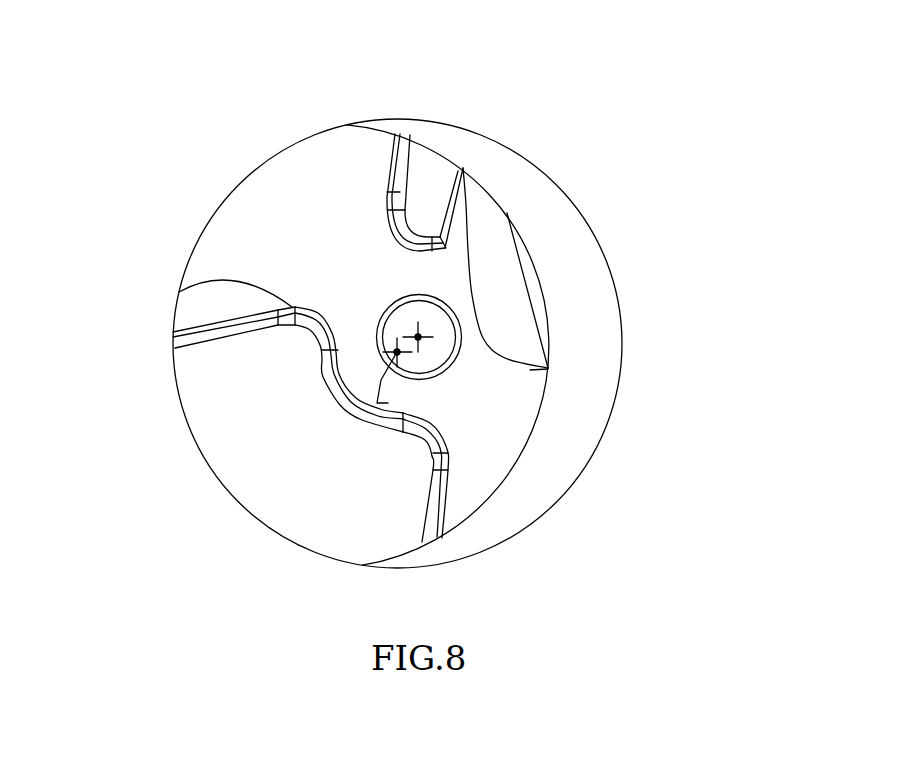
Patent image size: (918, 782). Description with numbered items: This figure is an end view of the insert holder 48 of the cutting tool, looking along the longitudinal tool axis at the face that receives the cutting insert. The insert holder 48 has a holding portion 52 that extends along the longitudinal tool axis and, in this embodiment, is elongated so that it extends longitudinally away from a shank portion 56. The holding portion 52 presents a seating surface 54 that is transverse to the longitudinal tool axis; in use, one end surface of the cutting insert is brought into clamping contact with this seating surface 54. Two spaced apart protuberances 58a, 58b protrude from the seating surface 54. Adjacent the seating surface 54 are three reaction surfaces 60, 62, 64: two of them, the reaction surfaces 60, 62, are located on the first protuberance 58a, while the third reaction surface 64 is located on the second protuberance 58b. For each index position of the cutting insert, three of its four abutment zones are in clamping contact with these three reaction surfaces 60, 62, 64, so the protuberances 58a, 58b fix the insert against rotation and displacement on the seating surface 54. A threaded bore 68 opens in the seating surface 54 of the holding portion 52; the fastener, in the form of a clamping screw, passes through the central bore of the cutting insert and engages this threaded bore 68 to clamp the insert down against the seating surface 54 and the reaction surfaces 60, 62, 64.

The insert holder 48 is at (197, 218).
The holding portion 52 is at (490, 317).
The seating surface 54 is at (327, 267).
The shank portion 56 is at (565, 187).
The first protuberance 58a is at (285, 462).
The second protuberance 58b is at (433, 192).
The reaction surface 60 is at (450, 467).
The reaction surface 62 is at (179, 292).
The reaction surface 64 is at (387, 199).
The threaded bore 68 is at (432, 348).